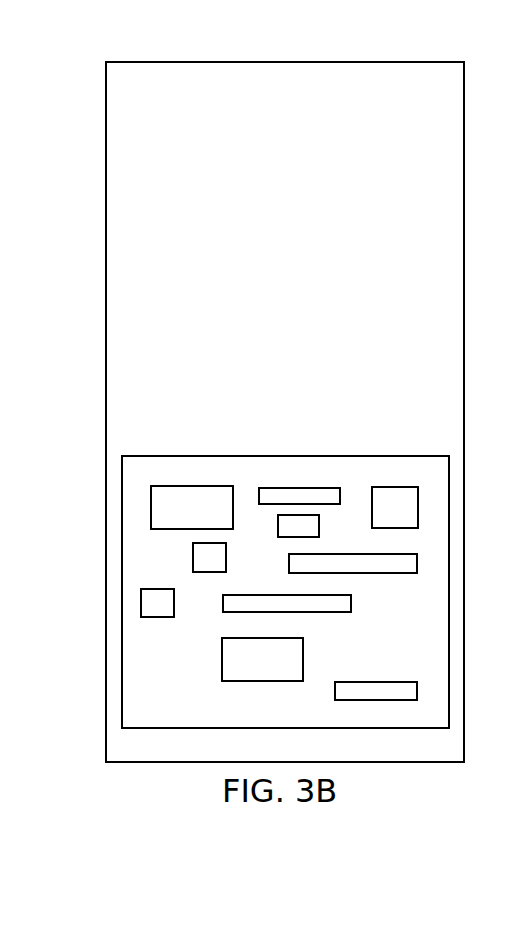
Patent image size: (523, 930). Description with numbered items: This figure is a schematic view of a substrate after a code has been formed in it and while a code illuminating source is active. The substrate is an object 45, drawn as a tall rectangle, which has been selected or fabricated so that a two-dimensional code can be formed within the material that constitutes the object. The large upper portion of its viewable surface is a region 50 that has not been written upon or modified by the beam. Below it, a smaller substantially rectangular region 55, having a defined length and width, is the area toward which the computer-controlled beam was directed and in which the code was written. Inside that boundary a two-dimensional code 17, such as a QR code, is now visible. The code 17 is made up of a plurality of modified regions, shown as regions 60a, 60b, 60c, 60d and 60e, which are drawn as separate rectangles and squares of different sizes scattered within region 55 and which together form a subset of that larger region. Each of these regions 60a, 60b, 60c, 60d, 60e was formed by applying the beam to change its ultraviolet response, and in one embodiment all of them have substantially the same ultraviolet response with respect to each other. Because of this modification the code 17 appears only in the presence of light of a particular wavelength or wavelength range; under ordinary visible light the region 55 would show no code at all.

The object 45 is at (230, 62).
The region 50 is at (281, 245).
The 2D code 17 is at (449, 522).
The region 55 is at (279, 598).
The region 60a is at (192, 486).
The region 60b is at (299, 488).
The region 60c is at (394, 487).
The region 60d is at (223, 598).
The region 60e is at (377, 702).